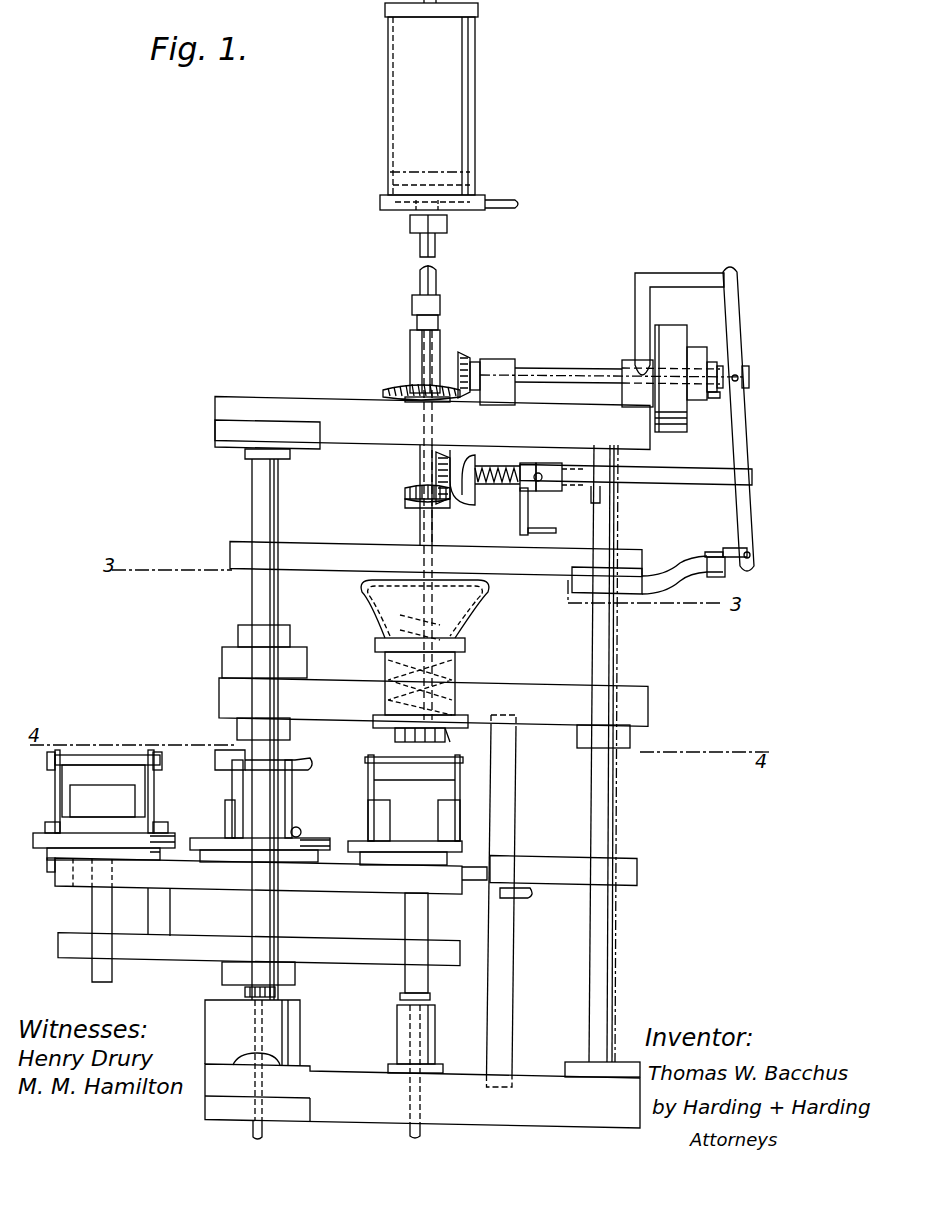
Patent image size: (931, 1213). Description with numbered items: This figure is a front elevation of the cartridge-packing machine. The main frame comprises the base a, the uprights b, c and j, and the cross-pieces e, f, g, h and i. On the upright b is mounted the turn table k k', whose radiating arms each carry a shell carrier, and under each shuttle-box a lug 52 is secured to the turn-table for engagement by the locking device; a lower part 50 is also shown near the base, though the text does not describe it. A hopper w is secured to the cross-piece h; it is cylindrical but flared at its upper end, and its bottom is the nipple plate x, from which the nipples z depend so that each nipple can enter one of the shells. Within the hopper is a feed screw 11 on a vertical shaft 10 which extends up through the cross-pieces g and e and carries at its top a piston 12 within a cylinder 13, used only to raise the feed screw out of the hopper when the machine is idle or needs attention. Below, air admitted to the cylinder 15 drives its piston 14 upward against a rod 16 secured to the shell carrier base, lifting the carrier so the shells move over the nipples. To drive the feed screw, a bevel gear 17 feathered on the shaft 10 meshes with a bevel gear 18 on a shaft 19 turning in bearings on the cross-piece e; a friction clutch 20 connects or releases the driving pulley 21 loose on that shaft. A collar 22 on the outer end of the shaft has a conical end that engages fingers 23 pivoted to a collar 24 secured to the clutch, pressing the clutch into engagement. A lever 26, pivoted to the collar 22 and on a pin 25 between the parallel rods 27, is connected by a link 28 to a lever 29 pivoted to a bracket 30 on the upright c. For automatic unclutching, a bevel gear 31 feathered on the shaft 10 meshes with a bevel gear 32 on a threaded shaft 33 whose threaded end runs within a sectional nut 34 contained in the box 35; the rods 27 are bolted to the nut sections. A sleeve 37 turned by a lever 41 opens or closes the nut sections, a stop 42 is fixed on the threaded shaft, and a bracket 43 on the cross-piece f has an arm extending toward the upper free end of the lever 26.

The vertical shaft 10 is at (437, 275).
The feed screw 11 is at (440, 663).
The piston 12 is at (406, 176).
The cylinder 13 is at (449, 128).
The piston 14 is at (408, 1060).
The cylinder 15 is at (400, 1012).
The rod 16 is at (92, 906).
The bevel gear 17 is at (392, 387).
The bevel gear 18 is at (462, 357).
The shaft 19 is at (535, 372).
The friction clutch 20 is at (698, 353).
The driving pulley 21 is at (662, 332).
The collar 22 is at (749, 372).
The fingers 23 is at (712, 362).
The collar 24 is at (714, 398).
The pin 25 is at (749, 380).
The lever 26 is at (749, 426).
The parallel rods 27 is at (668, 471).
The link 28 is at (725, 544).
The lever 29 is at (712, 570).
The bracket 30 is at (645, 590).
The bevel gear 31 is at (405, 494).
The bevel gear 32 is at (436, 468).
The threaded shaft 33 is at (500, 482).
The sectional nut 34 is at (540, 463).
The box 35 is at (523, 463).
The sleeve 37 is at (528, 510).
The lever 41 is at (555, 531).
The stop 42 is at (468, 483).
The bracket 43 is at (635, 302).
The bearing block 50 is at (218, 1013).
The lug 52 is at (47, 864).
The base a is at (422, 1069).
The upright b is at (252, 597).
The upright c is at (616, 632).
The cross-piece e is at (432, 423).
The cross-piece f is at (215, 432).
The cross-piece g is at (436, 568).
The cross-piece h is at (433, 713).
The cross-piece i is at (222, 658).
The upright j is at (535, 802).
The turn table k is at (346, 877).
The turn table k' is at (259, 959).
The hopper w is at (470, 608).
The nipple plate x is at (455, 730).
The nipple z is at (395, 735).